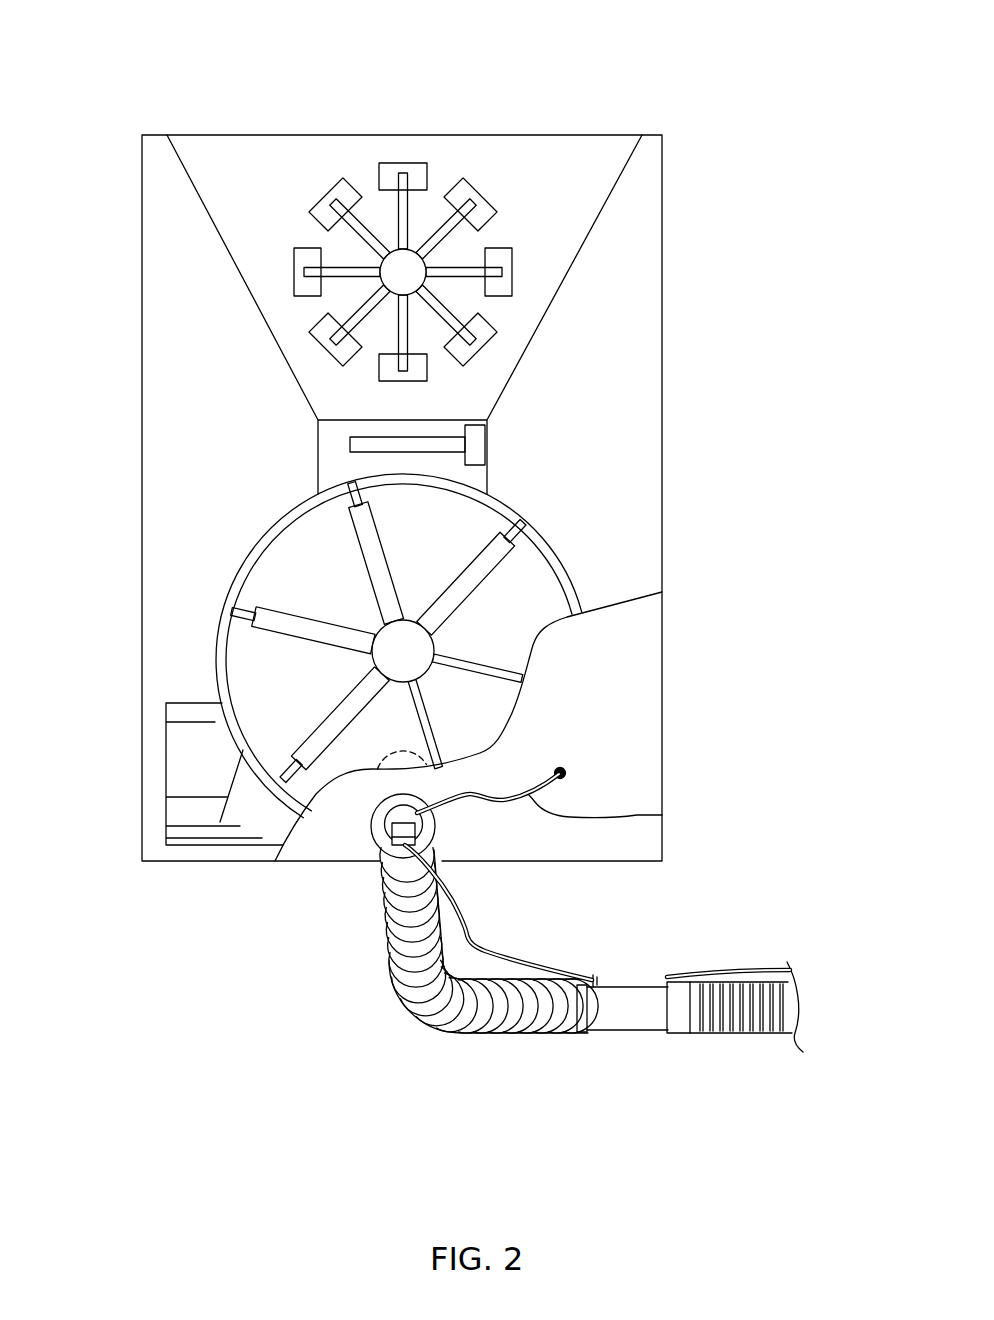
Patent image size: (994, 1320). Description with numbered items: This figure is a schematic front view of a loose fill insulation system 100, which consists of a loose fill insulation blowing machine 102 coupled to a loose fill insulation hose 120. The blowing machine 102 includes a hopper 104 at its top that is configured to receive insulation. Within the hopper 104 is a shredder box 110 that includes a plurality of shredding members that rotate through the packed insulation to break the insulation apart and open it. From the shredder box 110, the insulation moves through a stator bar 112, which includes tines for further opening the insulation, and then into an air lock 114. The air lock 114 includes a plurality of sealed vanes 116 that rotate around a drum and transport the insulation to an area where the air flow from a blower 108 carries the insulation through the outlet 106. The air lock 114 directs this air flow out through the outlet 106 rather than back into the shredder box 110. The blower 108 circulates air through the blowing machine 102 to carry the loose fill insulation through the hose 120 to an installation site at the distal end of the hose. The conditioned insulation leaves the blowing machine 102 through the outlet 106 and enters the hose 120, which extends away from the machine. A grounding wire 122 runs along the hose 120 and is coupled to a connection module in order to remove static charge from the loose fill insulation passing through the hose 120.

The loose fill insulation system 100 is at (818, 228).
The loose fill insulation blowing machine 102 is at (702, 106).
The hopper 104 is at (276, 158).
The outlet 106 is at (375, 833).
The blower 108 is at (190, 777).
The shredder box 110 is at (292, 320).
The stator bar 112 is at (382, 447).
The air lock 114 is at (447, 547).
The sealed vanes 116 is at (351, 716).
The loose fill insulation hose 120 is at (695, 925).
The grounding wire 122 is at (662, 813).